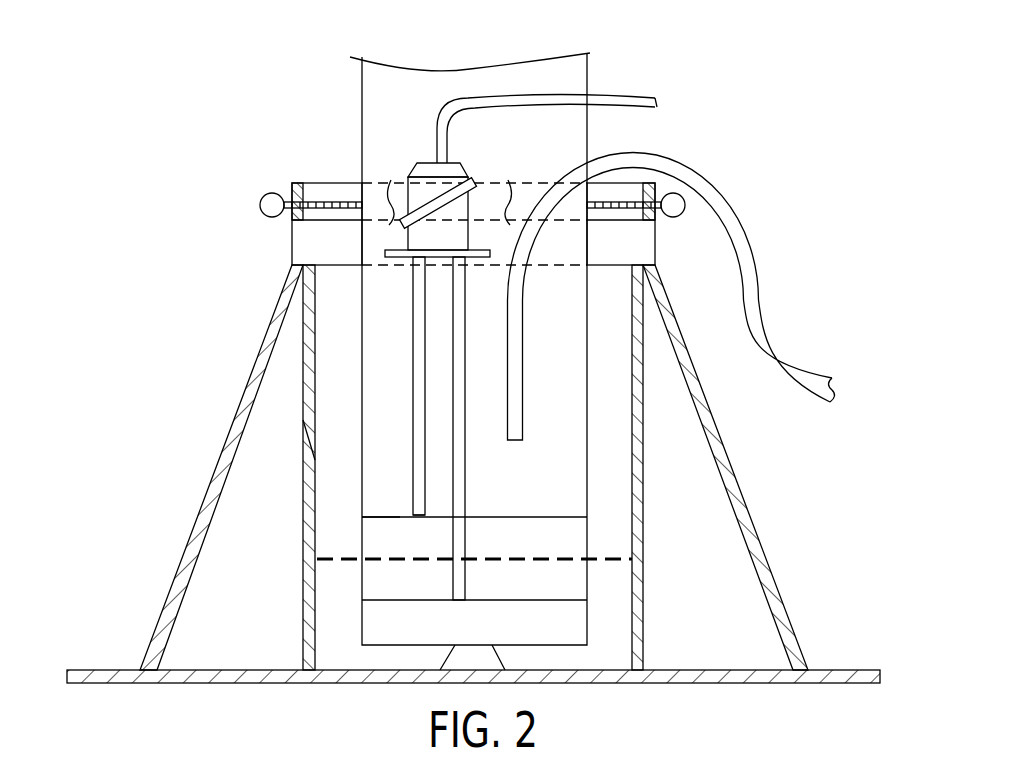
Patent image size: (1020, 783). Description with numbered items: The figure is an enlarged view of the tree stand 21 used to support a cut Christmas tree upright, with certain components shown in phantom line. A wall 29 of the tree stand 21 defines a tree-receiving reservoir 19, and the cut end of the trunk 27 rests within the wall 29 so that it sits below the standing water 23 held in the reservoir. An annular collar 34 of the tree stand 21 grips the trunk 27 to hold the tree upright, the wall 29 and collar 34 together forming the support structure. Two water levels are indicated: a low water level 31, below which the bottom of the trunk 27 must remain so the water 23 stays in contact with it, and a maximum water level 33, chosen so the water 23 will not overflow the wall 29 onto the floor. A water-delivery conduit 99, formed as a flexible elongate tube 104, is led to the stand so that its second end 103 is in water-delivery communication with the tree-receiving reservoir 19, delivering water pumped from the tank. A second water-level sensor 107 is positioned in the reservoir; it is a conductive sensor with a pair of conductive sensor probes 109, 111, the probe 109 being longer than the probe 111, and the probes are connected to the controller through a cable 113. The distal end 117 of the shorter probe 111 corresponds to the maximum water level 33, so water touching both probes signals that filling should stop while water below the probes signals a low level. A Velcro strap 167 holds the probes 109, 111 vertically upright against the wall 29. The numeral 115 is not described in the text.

The tree-receiving reservoir 19 is at (325, 522).
The tree stand 21 is at (222, 447).
The standing water 23 is at (565, 560).
The trunk 27 is at (380, 305).
The wall 29 is at (316, 420).
The low water level 31 is at (563, 600).
The maximum water level 33 is at (382, 515).
The annular collar 34 is at (490, 183).
The water-delivery conduit 99 is at (752, 272).
The second end 103 is at (513, 443).
The flexible elongate tube 104 is at (782, 383).
The second water-level sensor 107 is at (404, 162).
The conductive sensor probe 109 is at (467, 518).
The conductive sensor probe 111 is at (412, 405).
The cable 113 is at (463, 102).
The probe rod 115 is at (458, 603).
The distal end 117 is at (418, 517).
The Velcro strap 167 is at (425, 201).